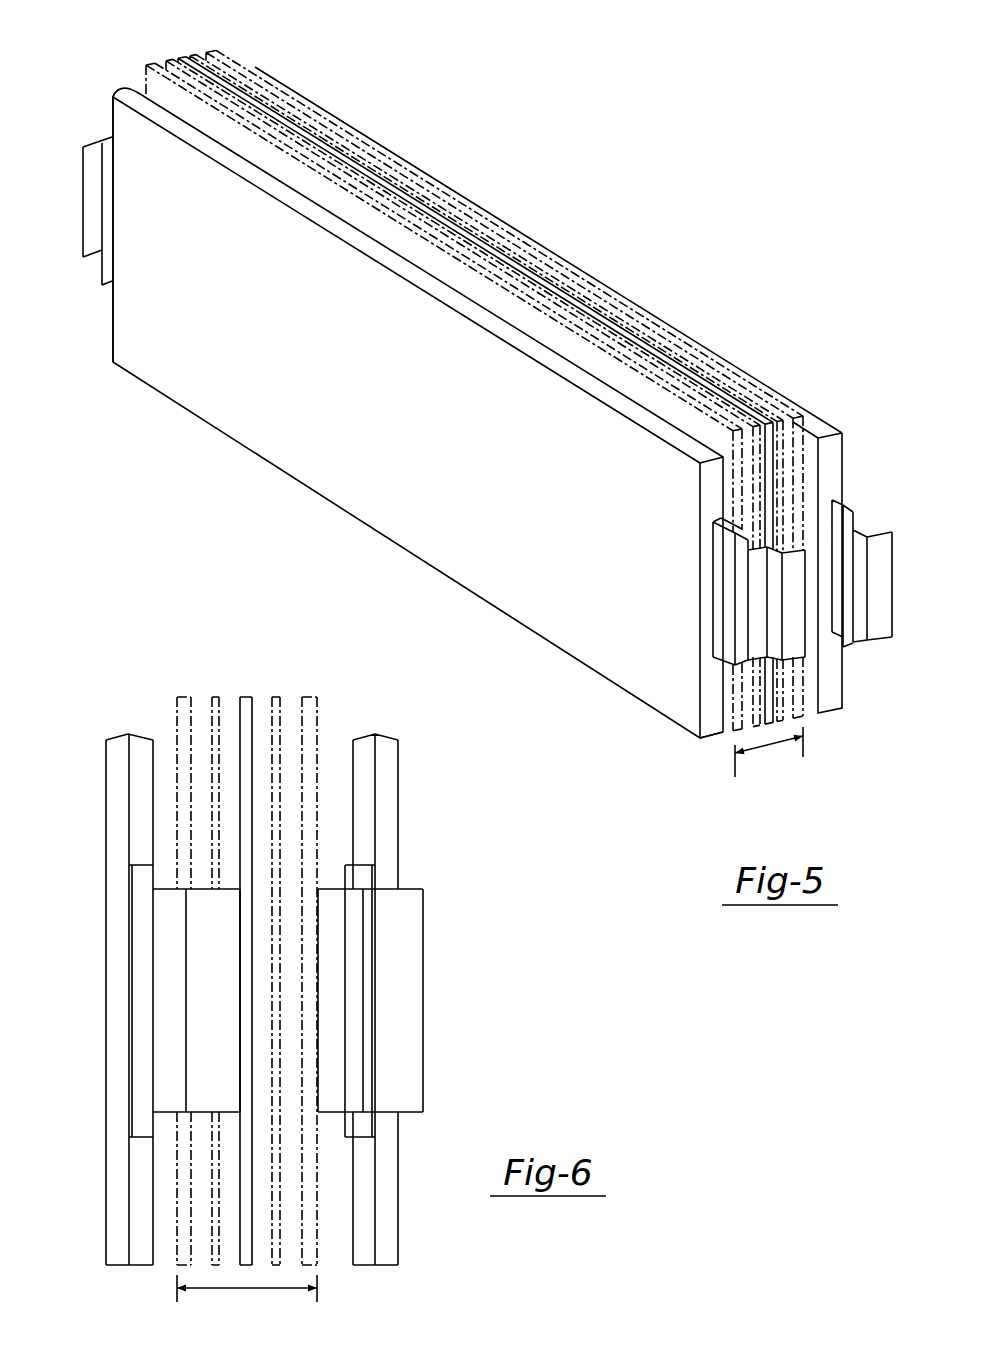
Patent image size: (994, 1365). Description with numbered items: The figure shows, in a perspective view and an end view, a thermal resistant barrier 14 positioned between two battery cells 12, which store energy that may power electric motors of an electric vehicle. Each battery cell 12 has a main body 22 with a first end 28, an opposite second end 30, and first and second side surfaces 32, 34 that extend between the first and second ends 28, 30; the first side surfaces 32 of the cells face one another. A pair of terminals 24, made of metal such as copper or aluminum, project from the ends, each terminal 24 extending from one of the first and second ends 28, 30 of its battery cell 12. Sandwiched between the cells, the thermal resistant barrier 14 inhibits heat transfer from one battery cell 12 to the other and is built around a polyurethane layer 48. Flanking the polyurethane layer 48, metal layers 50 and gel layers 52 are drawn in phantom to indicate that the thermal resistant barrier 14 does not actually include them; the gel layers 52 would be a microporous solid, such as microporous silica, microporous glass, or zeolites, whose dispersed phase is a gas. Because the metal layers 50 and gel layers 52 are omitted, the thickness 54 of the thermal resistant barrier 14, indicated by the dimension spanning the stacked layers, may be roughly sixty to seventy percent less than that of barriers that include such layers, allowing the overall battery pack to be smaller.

In FIG. 5, the battery cell 12 is at (703, 746).
In FIG. 6, the battery cell 12 is at (126, 730).
In FIG. 5, the thermal resistant barrier 14 is at (212, 34).
In FIG. 6, the thermal resistant barrier 14 is at (163, 632).
In FIG. 5, the main body 22 is at (110, 90).
In FIG. 5, the terminal 24 is at (95, 215).
In FIG. 6, the terminal 24 is at (145, 964).
In FIG. 5, the first end 28 is at (104, 327).
In FIG. 5, the second end 30 is at (716, 672).
In FIG. 5, the first side surface 32 is at (322, 213).
In FIG. 5, the second side surface 34 is at (233, 392).
In FIG. 5, the polyurethane layer 48 is at (478, 247).
In FIG. 6, the polyurethane layer 48 is at (246, 695).
In FIG. 5, the metal layer 50 is at (434, 205).
In FIG. 6, the metal layer 50 is at (215, 695).
In FIG. 5, the gel layer 52 is at (378, 155).
In FIG. 6, the gel layer 52 is at (184, 695).
In FIG. 5, the thickness 54 is at (770, 752).
In FIG. 6, the thickness 54 is at (244, 1290).